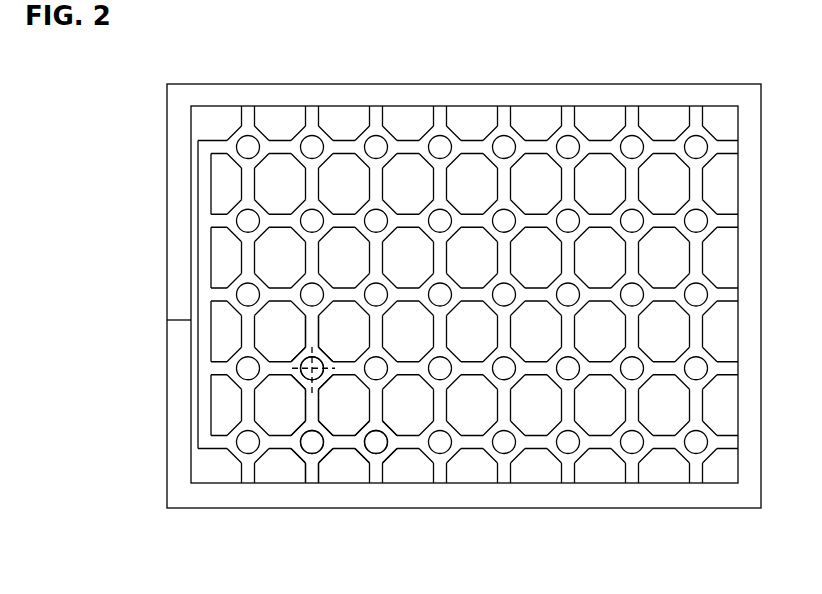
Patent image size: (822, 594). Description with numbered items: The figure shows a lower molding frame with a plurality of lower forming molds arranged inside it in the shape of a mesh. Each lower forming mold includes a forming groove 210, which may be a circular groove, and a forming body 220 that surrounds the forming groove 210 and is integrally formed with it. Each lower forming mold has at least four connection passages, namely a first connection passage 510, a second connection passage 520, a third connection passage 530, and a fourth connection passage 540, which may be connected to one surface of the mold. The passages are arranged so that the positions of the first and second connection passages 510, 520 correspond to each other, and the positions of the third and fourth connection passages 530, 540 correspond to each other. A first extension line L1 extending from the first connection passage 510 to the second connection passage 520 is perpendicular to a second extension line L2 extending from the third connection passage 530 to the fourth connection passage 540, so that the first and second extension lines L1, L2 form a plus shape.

The forming groove 210 is at (320, 384).
The forming body 220 is at (300, 368).
The first connection passage 510 is at (296, 381).
The second connection passage 520 is at (322, 380).
The third connection passage 530 is at (312, 408).
The fourth connection passage 540 is at (313, 318).
The first extension line L1 is at (312, 370).
The second extension line L2 is at (312, 370).